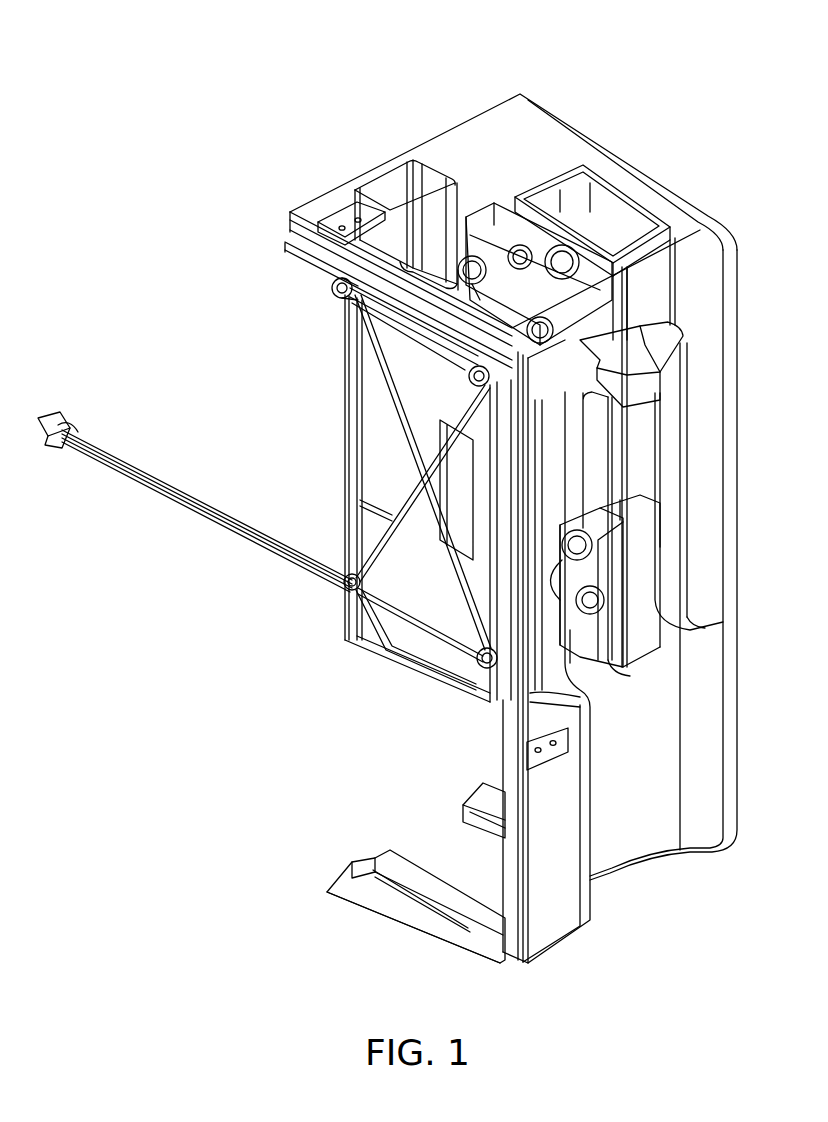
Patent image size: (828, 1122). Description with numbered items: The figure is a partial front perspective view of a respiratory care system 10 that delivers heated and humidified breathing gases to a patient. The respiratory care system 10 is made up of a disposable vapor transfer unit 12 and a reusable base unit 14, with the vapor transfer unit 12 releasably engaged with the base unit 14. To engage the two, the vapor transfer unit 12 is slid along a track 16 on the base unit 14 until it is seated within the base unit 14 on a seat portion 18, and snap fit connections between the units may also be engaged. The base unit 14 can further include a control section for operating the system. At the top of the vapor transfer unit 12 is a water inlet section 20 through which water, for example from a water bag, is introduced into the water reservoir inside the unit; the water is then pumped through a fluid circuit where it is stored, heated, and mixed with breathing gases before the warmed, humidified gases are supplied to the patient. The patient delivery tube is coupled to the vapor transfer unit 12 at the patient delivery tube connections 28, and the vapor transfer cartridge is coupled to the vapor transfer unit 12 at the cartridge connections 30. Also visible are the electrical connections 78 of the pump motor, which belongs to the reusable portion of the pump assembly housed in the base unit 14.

The respiratory care system 10 is at (615, 90).
The vapor transfer unit 12 is at (672, 252).
The base unit 14 is at (446, 142).
The track 16 is at (660, 356).
The seat portion 18 is at (553, 693).
The water inlet section 20 is at (612, 228).
The patient delivery tube connections 28 is at (650, 672).
The cartridge connections 30 is at (556, 283).
The electrical connections 78 is at (222, 521).